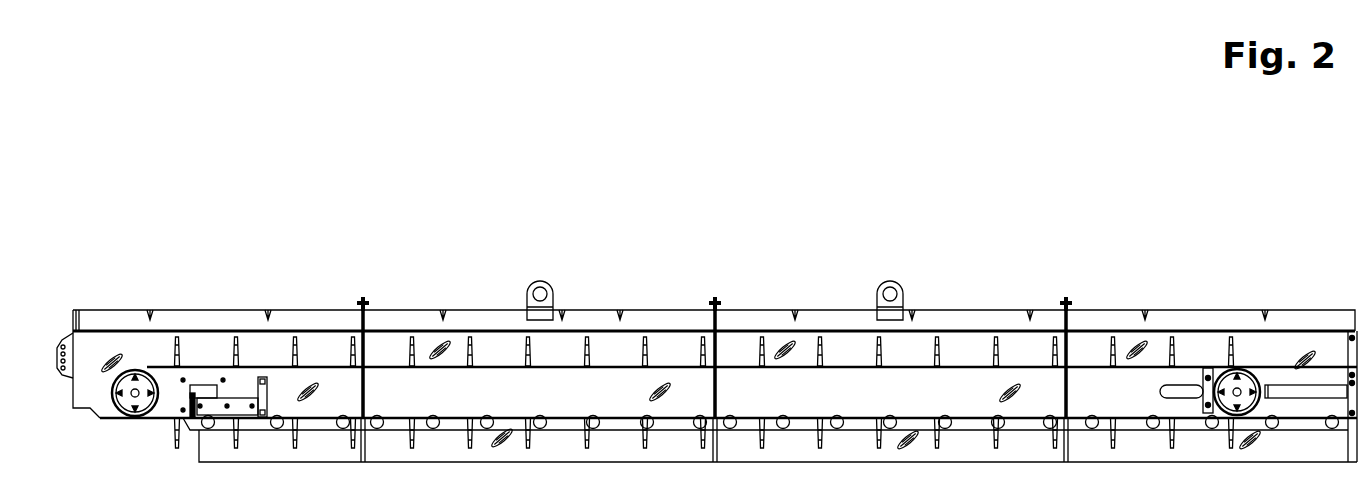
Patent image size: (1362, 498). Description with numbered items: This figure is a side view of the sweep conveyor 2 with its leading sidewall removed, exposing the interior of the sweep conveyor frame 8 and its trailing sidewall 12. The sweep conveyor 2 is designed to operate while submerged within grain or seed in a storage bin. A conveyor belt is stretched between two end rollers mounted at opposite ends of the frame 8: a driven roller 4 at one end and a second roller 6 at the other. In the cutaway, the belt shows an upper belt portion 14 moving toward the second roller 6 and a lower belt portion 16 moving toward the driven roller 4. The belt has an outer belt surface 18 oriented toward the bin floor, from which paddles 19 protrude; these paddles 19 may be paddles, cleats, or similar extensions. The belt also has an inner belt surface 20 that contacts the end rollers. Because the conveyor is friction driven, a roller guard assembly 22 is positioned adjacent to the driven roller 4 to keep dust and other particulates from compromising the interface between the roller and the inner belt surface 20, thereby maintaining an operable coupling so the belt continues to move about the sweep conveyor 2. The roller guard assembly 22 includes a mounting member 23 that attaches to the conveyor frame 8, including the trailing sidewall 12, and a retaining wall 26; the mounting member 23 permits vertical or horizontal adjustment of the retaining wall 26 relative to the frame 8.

The sweep conveyor 2 is at (178, 238).
The driven roller 4 is at (133, 417).
The second roller 6 is at (1249, 371).
The sweep conveyor frame 8 is at (365, 300).
The trailing sidewall 12 is at (751, 356).
The upper belt portion 14 is at (623, 362).
The lower belt portion 16 is at (627, 422).
The outer belt surface 18 is at (912, 365).
The paddles 19 is at (351, 336).
The inner belt surface 20 is at (912, 369).
The roller guard assembly 22 is at (230, 375).
The mounting member 23 is at (267, 386).
The retaining wall 26 is at (192, 396).